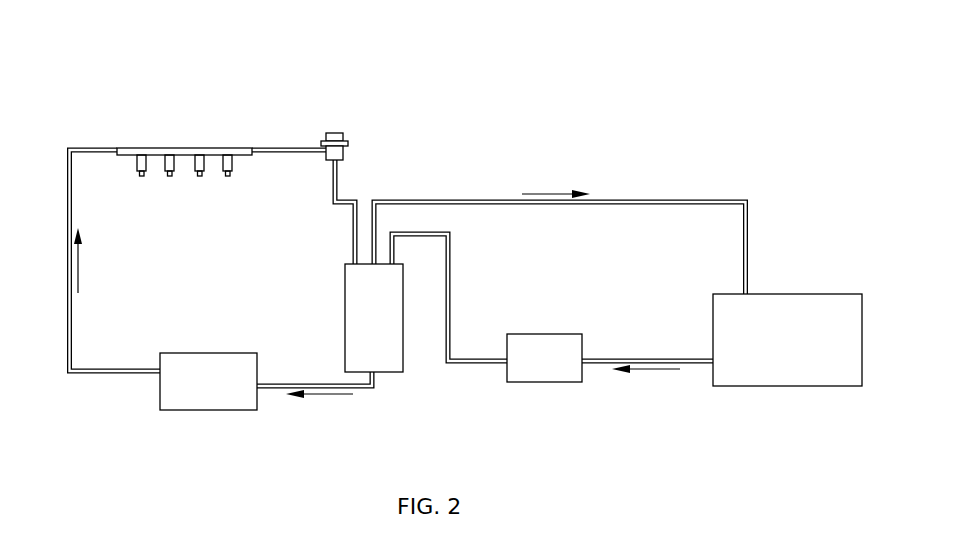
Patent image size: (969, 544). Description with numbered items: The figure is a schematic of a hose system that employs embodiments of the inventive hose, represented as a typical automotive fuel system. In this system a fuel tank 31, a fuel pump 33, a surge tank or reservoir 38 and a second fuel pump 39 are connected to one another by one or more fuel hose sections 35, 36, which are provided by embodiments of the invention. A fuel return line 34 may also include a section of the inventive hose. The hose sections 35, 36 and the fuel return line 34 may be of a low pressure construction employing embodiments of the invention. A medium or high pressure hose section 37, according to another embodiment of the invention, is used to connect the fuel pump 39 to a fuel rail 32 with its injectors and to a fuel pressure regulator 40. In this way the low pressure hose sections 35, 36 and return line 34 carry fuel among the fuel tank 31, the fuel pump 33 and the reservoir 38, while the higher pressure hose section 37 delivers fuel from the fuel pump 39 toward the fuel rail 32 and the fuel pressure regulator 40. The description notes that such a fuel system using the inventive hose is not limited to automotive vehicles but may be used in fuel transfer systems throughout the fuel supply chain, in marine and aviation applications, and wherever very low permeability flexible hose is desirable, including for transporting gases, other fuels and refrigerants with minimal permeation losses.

The fuel tank 31 is at (817, 294).
The fuel rail 32 is at (132, 149).
The fuel pump 33 is at (563, 383).
The fuel return line 34 is at (746, 200).
The fuel hose section 35 is at (368, 390).
The fuel hose section 36 is at (477, 364).
The medium or high pressure hose section 37 is at (67, 306).
The surge tank or reservoir 38 is at (403, 366).
The fuel pump 39 is at (173, 411).
The fuel pressure regulator 40 is at (343, 133).